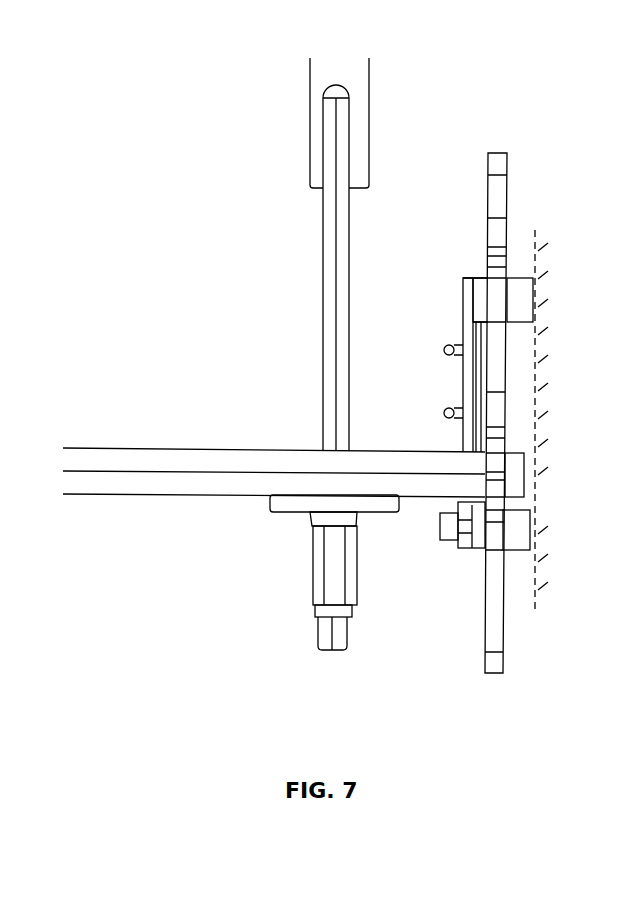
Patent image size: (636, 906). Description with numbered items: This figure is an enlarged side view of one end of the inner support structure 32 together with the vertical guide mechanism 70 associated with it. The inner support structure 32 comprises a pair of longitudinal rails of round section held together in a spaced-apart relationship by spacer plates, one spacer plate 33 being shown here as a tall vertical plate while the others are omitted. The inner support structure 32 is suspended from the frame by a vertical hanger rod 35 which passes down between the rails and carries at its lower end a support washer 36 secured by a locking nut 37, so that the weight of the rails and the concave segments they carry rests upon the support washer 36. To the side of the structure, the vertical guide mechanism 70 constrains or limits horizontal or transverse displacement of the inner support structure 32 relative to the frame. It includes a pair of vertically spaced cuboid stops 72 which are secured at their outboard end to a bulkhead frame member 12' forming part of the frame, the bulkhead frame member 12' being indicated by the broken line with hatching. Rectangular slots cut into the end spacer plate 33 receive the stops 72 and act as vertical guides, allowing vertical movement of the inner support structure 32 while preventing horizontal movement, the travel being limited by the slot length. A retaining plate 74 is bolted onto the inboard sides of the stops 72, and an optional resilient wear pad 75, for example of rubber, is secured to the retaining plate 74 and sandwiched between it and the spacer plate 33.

The bulkhead frame member 12' is at (576, 420).
The inner support structure 32 is at (185, 494).
The spacer plate 33 is at (505, 200).
The hanger rod 35 is at (330, 269).
The support washer 36 is at (288, 507).
The locking nut 37 is at (322, 574).
The vertical guide mechanism 70 is at (580, 278).
The stop 72 is at (488, 280).
The retaining plate 74 is at (466, 302).
The wear pad 75 is at (486, 381).